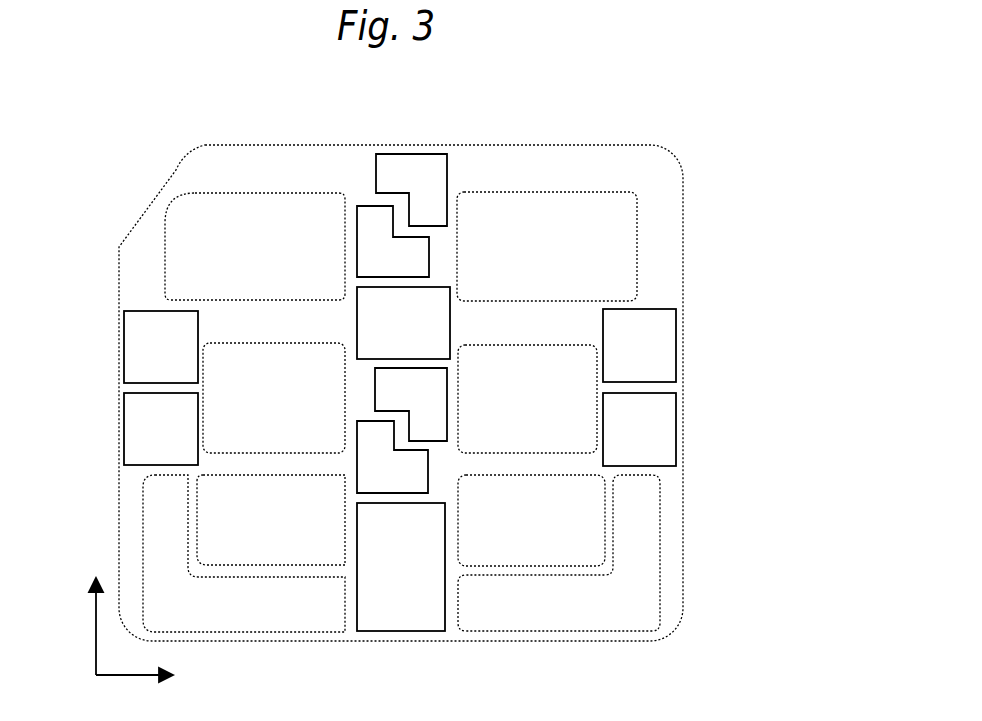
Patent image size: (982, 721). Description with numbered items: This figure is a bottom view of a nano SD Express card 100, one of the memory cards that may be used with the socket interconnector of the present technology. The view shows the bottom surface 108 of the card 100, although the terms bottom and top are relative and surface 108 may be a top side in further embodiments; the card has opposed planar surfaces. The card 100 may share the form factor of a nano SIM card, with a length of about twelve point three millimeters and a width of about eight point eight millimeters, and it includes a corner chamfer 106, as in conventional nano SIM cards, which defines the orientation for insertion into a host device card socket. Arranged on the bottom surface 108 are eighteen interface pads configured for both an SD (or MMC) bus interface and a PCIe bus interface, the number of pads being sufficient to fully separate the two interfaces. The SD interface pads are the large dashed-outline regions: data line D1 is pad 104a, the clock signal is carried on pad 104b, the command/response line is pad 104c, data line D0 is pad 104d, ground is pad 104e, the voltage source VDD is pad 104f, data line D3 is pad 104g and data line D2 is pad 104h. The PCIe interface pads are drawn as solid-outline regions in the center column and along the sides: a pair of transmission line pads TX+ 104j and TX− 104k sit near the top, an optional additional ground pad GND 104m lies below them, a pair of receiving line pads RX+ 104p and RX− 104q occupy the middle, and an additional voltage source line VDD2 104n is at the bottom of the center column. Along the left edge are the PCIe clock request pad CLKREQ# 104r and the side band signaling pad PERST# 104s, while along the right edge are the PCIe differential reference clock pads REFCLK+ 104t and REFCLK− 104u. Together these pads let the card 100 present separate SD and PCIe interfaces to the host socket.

The nano SD Express card 100 is at (757, 170).
The corner chamfer 106 is at (183, 163).
The bottom surface 108 is at (620, 171).
The data line D1 pad 104a is at (255, 246).
The clock signal pad 104b is at (547, 246).
The command/response line pad 104c is at (274, 398).
The data line D0 pad 104d is at (527, 399).
The ground pad 104e is at (271, 520).
The voltage source VDD pad 104f is at (531, 520).
The data line D3 pad 104g is at (244, 553).
The data line D2 pad 104h is at (559, 553).
The transmission line pad TX+ 104j is at (367, 206).
The transmission line pad TX− 104k is at (424, 156).
The additional ground pad GND 104m is at (357, 308).
The additional voltage source line pad VDD2 104n is at (385, 632).
The receiving line pad RX+ 104p is at (357, 467).
The receiving line pad RX− 104q is at (445, 375).
The PCIe clock request pad CLKREQ# 104r is at (128, 332).
The side band signaling pad PERST# 104s is at (128, 440).
The PCIe differential reference clock pad REFCLK+ 104t is at (673, 333).
The PCIe differential reference clock pad REFCLK− 104u is at (673, 443).